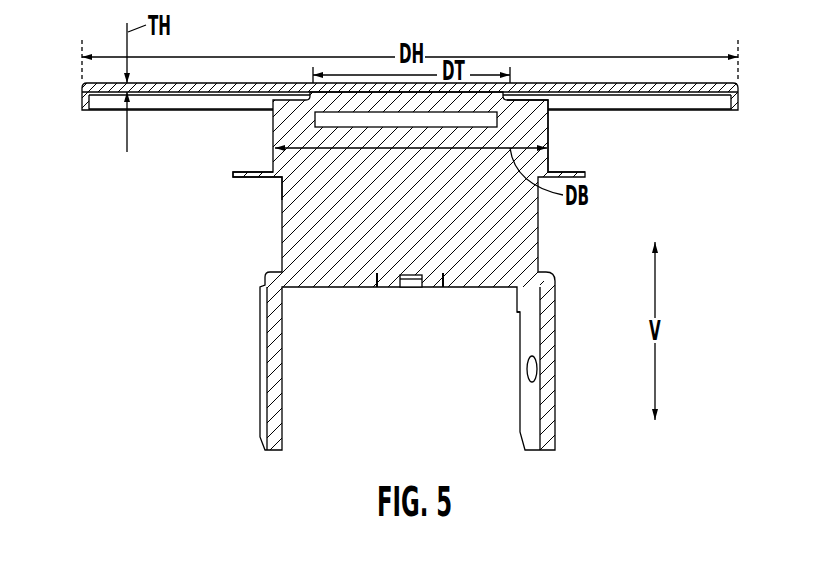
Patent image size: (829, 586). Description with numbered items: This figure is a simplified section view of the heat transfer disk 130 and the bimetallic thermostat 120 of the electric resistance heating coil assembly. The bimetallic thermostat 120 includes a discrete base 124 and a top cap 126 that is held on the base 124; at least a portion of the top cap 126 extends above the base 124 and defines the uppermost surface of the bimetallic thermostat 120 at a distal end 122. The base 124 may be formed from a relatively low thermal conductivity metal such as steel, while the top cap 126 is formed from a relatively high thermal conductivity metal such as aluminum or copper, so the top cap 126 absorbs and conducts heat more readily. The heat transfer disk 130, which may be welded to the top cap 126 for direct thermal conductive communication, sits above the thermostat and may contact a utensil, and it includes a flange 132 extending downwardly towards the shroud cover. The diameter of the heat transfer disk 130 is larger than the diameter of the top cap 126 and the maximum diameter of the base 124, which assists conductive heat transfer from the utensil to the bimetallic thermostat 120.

The bimetallic thermostat 120 is at (298, 207).
The distal end 122 is at (553, 105).
The base 124 is at (282, 192).
The top cap 126 is at (358, 93).
The heat transfer disk 130 is at (663, 88).
The flange 132 is at (82, 103).